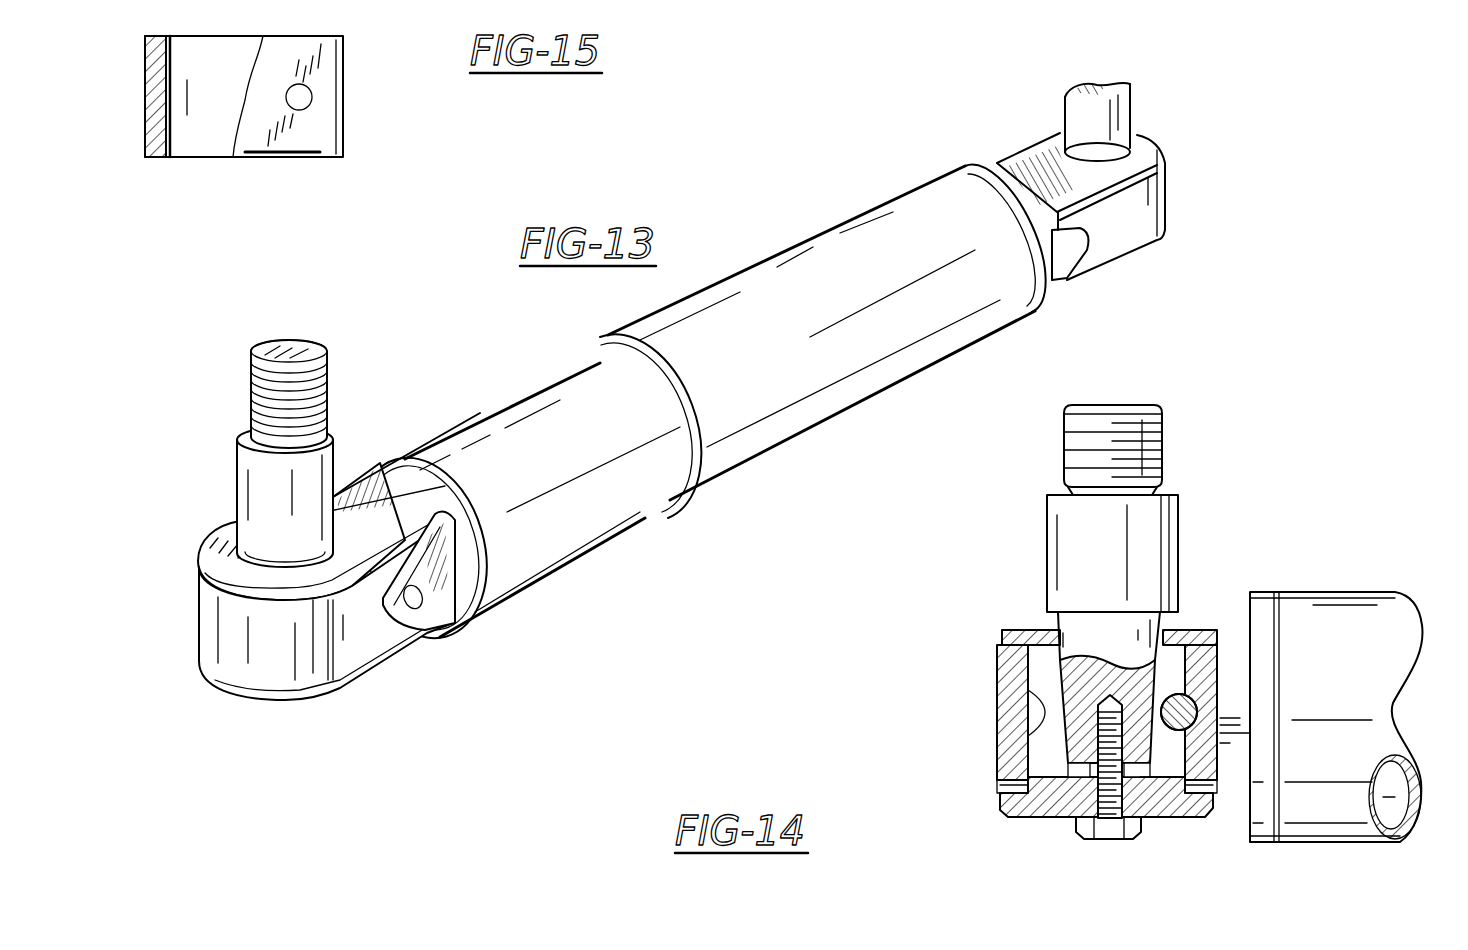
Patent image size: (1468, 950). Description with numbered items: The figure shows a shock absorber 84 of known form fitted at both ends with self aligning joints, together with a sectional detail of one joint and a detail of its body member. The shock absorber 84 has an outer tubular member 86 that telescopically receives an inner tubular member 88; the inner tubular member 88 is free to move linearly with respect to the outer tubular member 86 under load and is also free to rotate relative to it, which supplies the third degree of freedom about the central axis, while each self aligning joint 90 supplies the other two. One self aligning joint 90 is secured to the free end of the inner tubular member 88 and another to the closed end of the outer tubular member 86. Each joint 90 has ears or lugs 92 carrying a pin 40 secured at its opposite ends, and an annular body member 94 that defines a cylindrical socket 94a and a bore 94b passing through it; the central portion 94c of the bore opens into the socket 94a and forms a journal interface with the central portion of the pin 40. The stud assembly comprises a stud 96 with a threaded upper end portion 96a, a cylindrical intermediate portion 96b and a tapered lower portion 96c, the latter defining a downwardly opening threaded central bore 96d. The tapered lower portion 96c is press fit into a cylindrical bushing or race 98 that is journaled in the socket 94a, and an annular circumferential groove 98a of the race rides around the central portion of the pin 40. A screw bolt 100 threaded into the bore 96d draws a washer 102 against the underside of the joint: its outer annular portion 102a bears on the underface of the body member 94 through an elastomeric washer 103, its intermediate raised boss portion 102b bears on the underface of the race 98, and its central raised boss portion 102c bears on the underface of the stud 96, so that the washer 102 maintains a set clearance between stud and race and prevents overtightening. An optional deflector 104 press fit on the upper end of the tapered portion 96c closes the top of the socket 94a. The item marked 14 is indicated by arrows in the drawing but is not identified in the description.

In FIG. 13, the frame member 14 is at (225, 623).
In FIG. 13, the pin 40 is at (425, 605).
In FIG. 14, the pin 40 is at (1220, 757).
In FIG. 13, the shock absorber 84 is at (690, 407).
In FIG. 13, the outer tubular member 86 is at (858, 388).
In FIG. 13, the inner tubular member 88 is at (510, 410).
In FIG. 13, the self aligning joint 90 is at (723, 430).
In FIG. 13, the lugs 92 is at (794, 468).
In FIG. 13, the body member 94 is at (294, 646).
In FIG. 15, the body member 94 is at (288, 139).
In FIG. 14, the body member 94 is at (1106, 724).
In FIG. 14, the cylindrical socket 94a is at (1043, 710).
In FIG. 15, the bore 94b is at (312, 97).
In FIG. 14, the central portion of bore 94c is at (1215, 712).
In FIG. 13, the stud 96 is at (734, 311).
In FIG. 14, the stud 96 is at (1094, 579).
In FIG. 14, the threaded upper end portion 96a is at (1153, 445).
In FIG. 13, the cylindrical intermediate portion 96b is at (325, 478).
In FIG. 14, the cylindrical intermediate portion 96b is at (1165, 538).
In FIG. 14, the tapered lower portion 96c is at (1121, 642).
In FIG. 14, the threaded central bore 96d is at (1165, 658).
In FIG. 14, the cylindrical bushing or race 98 is at (1061, 673).
In FIG. 14, the annular circumferential groove 98a is at (1030, 660).
In FIG. 14, the screw bolt 100 is at (1078, 842).
In FIG. 14, the washer 102 is at (1076, 815).
In FIG. 14, the outer annular portion 102a is at (1190, 812).
In FIG. 14, the intermediate raised boss portion 102b is at (1153, 807).
In FIG. 14, the central raised boss portion 102c is at (1065, 765).
In FIG. 14, the elastomeric washer 103 is at (1060, 773).
In FIG. 14, the deflector 104 is at (1037, 628).